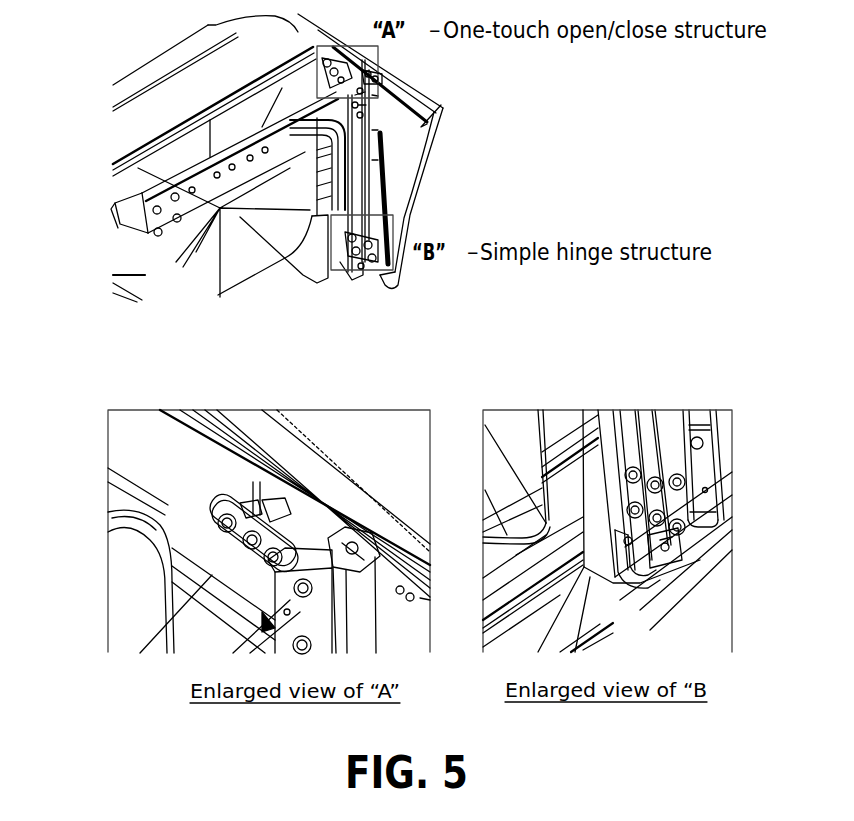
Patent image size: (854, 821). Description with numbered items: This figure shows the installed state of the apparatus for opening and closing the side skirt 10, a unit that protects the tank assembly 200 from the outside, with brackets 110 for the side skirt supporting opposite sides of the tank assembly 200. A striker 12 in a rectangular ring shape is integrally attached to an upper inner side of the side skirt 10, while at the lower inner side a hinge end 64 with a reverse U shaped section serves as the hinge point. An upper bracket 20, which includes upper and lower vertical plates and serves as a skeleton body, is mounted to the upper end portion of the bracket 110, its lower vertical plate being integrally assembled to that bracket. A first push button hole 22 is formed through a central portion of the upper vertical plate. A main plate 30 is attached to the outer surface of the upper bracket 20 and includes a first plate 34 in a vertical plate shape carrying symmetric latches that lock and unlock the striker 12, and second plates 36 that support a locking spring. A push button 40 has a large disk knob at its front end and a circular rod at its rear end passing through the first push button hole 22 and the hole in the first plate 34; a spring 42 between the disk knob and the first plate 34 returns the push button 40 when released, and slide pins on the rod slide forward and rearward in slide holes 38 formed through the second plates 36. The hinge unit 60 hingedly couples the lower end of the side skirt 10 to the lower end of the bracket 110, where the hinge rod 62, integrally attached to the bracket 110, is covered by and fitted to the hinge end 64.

The side skirt 10 is at (387, 437).
The striker 12 is at (282, 508).
The upper bracket 20 is at (215, 506).
The first push button hole 22 is at (124, 513).
The main plate 30 is at (232, 495).
The first plate 34 is at (237, 498).
The second plates 36 is at (270, 500).
The slide holes 38 is at (318, 527).
The push button 40 is at (240, 548).
The spring 42 is at (255, 552).
The hinge unit 60 is at (672, 581).
The hinge rod 62 is at (670, 578).
The hinge end 64 is at (667, 565).
The bracket for the side skirt 110 is at (392, 183).
The tank assembly 200 is at (255, 276).